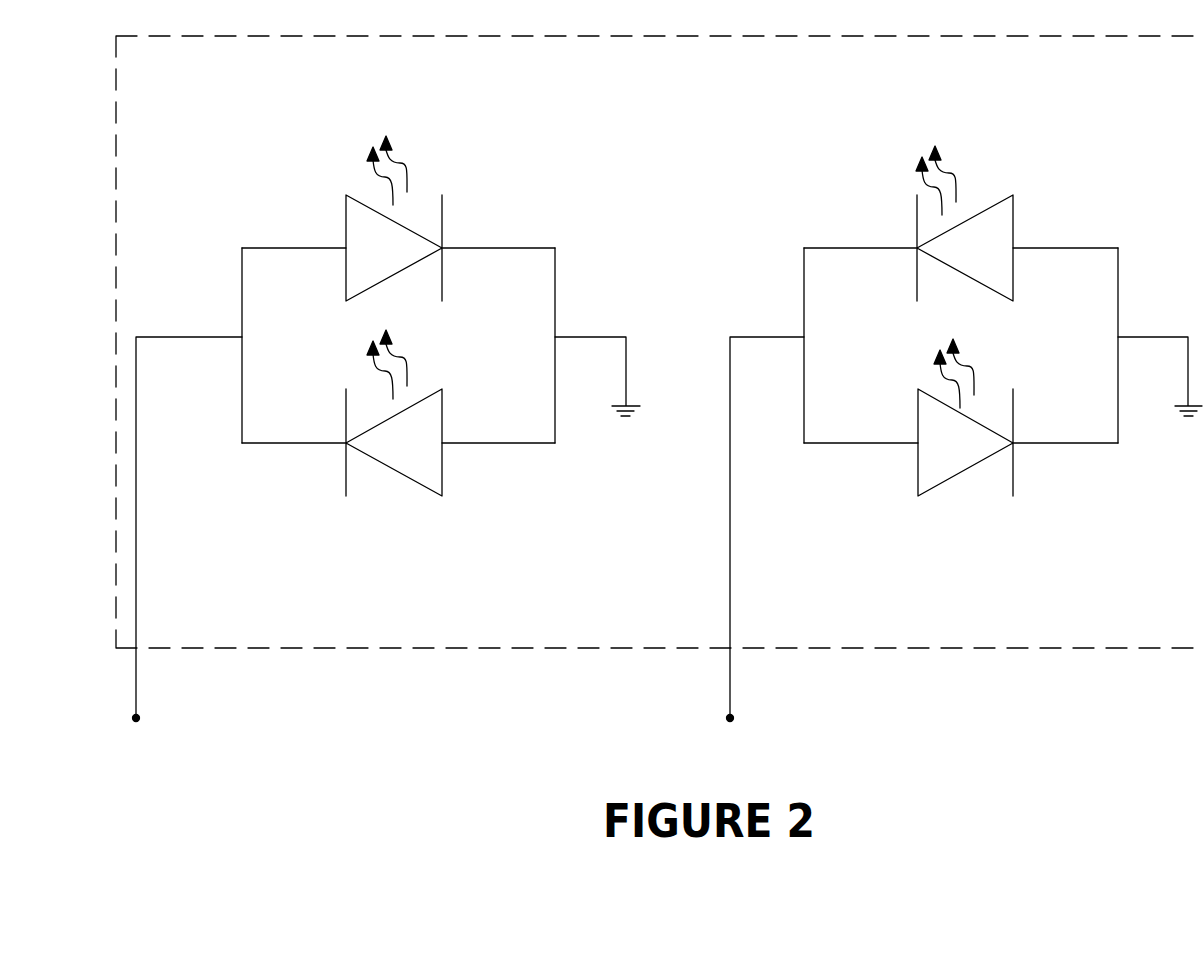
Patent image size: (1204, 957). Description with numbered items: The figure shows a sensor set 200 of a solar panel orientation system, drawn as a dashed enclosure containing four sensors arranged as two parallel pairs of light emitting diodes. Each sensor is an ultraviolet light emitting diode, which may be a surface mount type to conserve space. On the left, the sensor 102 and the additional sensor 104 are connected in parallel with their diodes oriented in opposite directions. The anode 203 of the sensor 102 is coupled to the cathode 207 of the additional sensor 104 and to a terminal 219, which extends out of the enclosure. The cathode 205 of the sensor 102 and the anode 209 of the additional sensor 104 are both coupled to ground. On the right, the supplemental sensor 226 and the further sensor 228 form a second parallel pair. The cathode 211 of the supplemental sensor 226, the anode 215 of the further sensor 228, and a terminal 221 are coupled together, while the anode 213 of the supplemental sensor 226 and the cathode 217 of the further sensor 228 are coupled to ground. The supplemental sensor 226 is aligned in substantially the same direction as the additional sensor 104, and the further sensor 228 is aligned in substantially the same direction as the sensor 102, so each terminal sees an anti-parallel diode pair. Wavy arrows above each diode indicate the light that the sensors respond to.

The sensor 102 is at (365, 203).
The additional sensor 104 is at (398, 470).
The sensor set 200 is at (884, 649).
The anode 203 is at (346, 247).
The cathode 205 is at (443, 247).
The cathode 207 is at (346, 443).
The anode 209 is at (443, 443).
The cathode 211 is at (917, 247).
The anode 213 is at (1014, 247).
The anode 215 is at (918, 443).
The cathode 217 is at (1014, 443).
The terminal 219 is at (188, 539).
The terminal 221 is at (766, 539).
The supplemental sensor 226 is at (1013, 197).
The further sensor 228 is at (961, 470).